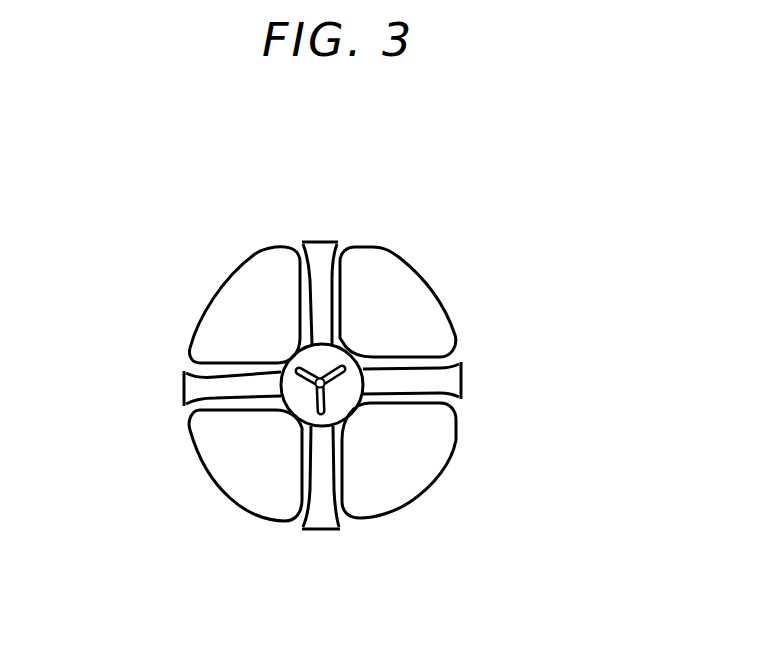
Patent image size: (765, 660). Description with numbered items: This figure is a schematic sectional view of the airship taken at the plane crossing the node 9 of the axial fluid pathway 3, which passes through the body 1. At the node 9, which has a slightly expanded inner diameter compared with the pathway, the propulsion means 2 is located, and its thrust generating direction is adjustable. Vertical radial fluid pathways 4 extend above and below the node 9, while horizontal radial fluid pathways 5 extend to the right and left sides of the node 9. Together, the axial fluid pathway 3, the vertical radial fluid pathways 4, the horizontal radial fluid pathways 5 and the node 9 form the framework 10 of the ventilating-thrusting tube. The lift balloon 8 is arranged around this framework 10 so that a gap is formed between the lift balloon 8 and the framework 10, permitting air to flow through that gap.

The body 1 is at (223, 246).
The propulsion means 2 is at (338, 395).
The axial fluid pathway 3 is at (343, 353).
The vertical radial fluid pathways 4 is at (320, 250).
The horizontal radial fluid pathways 5 is at (427, 378).
The lift balloon 8 is at (243, 477).
The node 9 is at (265, 363).
The framework of the ventilating-thrusting tube 10 is at (242, 393).